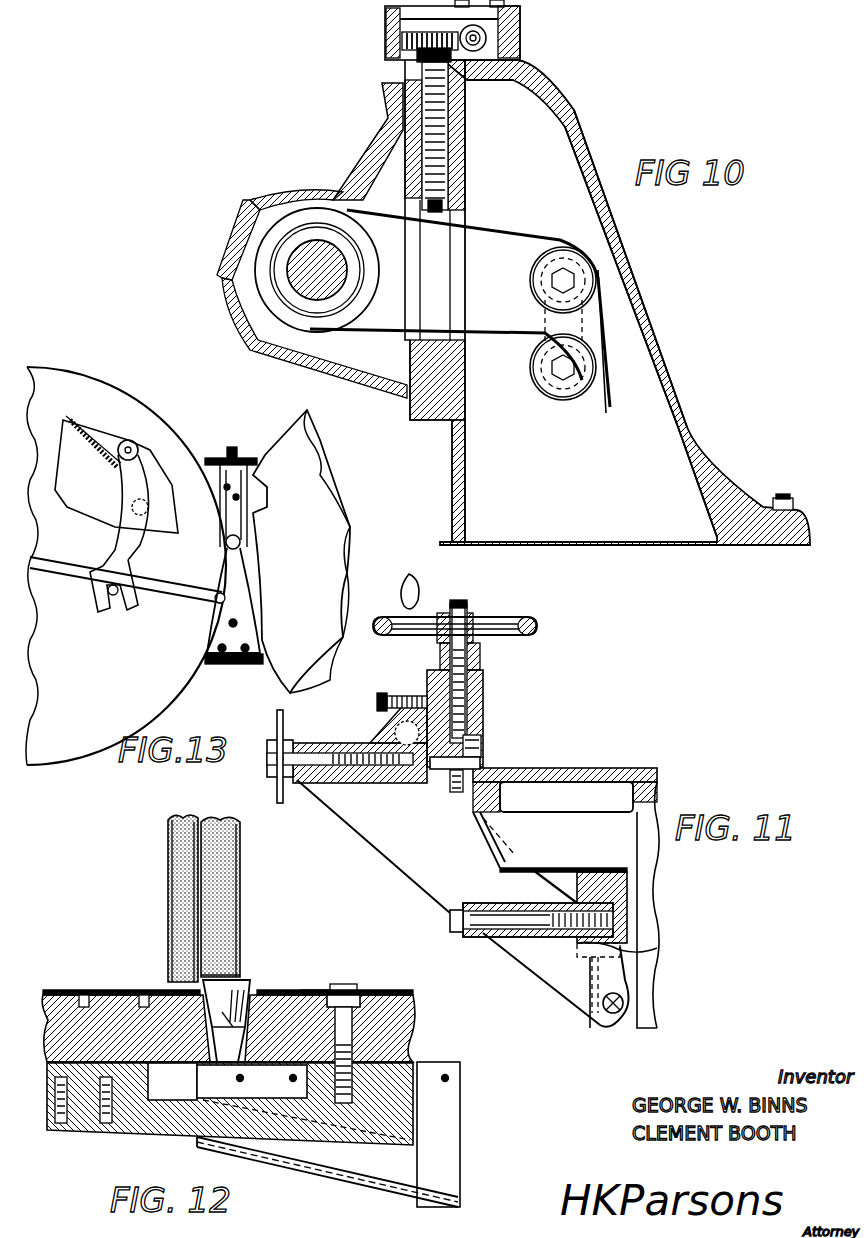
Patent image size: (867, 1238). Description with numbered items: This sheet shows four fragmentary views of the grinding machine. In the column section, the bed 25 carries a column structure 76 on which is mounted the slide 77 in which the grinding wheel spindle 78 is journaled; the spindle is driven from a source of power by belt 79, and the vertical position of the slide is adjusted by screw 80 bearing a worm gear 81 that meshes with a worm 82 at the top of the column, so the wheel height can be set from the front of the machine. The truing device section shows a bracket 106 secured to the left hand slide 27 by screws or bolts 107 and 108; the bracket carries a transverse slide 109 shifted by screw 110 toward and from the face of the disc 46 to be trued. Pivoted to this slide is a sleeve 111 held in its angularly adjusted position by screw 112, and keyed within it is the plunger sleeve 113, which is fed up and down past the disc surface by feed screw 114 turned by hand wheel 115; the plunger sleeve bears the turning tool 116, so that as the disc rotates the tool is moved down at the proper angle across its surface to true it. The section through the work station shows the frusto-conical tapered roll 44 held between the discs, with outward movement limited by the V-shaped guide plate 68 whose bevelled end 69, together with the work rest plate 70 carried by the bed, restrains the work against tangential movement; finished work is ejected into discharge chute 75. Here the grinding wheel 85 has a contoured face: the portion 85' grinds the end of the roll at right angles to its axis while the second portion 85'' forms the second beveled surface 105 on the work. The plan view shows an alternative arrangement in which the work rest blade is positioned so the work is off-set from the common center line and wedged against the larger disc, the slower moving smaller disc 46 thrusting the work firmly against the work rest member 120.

In FIG. 10, the column structure 76 is at (707, 463).
In FIG. 10, the slide 77 is at (388, 108).
In FIG. 10, the grinding wheel spindle 78 is at (300, 295).
In FIG. 10, the belt 79 is at (505, 330).
In FIG. 10, the screw 80 is at (447, 186).
In FIG. 10, the worm gear 81 is at (395, 30).
In FIG. 10, the worm 82 is at (500, 35).
In FIG. 13, the work rest member 120 is at (240, 540).
In FIG. 11, the disc 46 is at (628, 768).
In FIG. 11, the left hand slide 27 is at (650, 985).
In FIG. 11, the bracket 106 is at (420, 862).
In FIG. 11, the screw or bolt 107 is at (606, 1030).
In FIG. 11, the screw or bolt 108 is at (440, 940).
In FIG. 11, the transverse slide 109 is at (366, 732).
In FIG. 11, the screw 110 is at (346, 780).
In FIG. 11, the sleeve 111 is at (478, 720).
In FIG. 11, the screw 112 is at (416, 694).
In FIG. 11, the plunger sleeve 113 is at (480, 744).
In FIG. 11, the feed screw 114 is at (458, 604).
In FIG. 11, the hand wheel 115 is at (533, 626).
In FIG. 11, the turning tool 116 is at (480, 766).
In FIG. 12, the bed 25 is at (125, 1130).
In FIG. 12, the frusto-conical tapered roll 44 is at (252, 1081).
In FIG. 12, the V-shaped guide plate 68 is at (385, 992).
In FIG. 12, the bevelled end 69 is at (315, 978).
In FIG. 12, the work rest plate 70 is at (108, 992).
In FIG. 12, the discharge chute 75 is at (348, 1160).
In FIG. 12, the grinding wheel 85 is at (155, 898).
In FIG. 12, the grinding wheel portion 85' is at (243, 897).
In FIG. 12, the second grinding wheel portion 85'' is at (181, 958).
In FIG. 12, the second beveled surface 105 is at (253, 978).